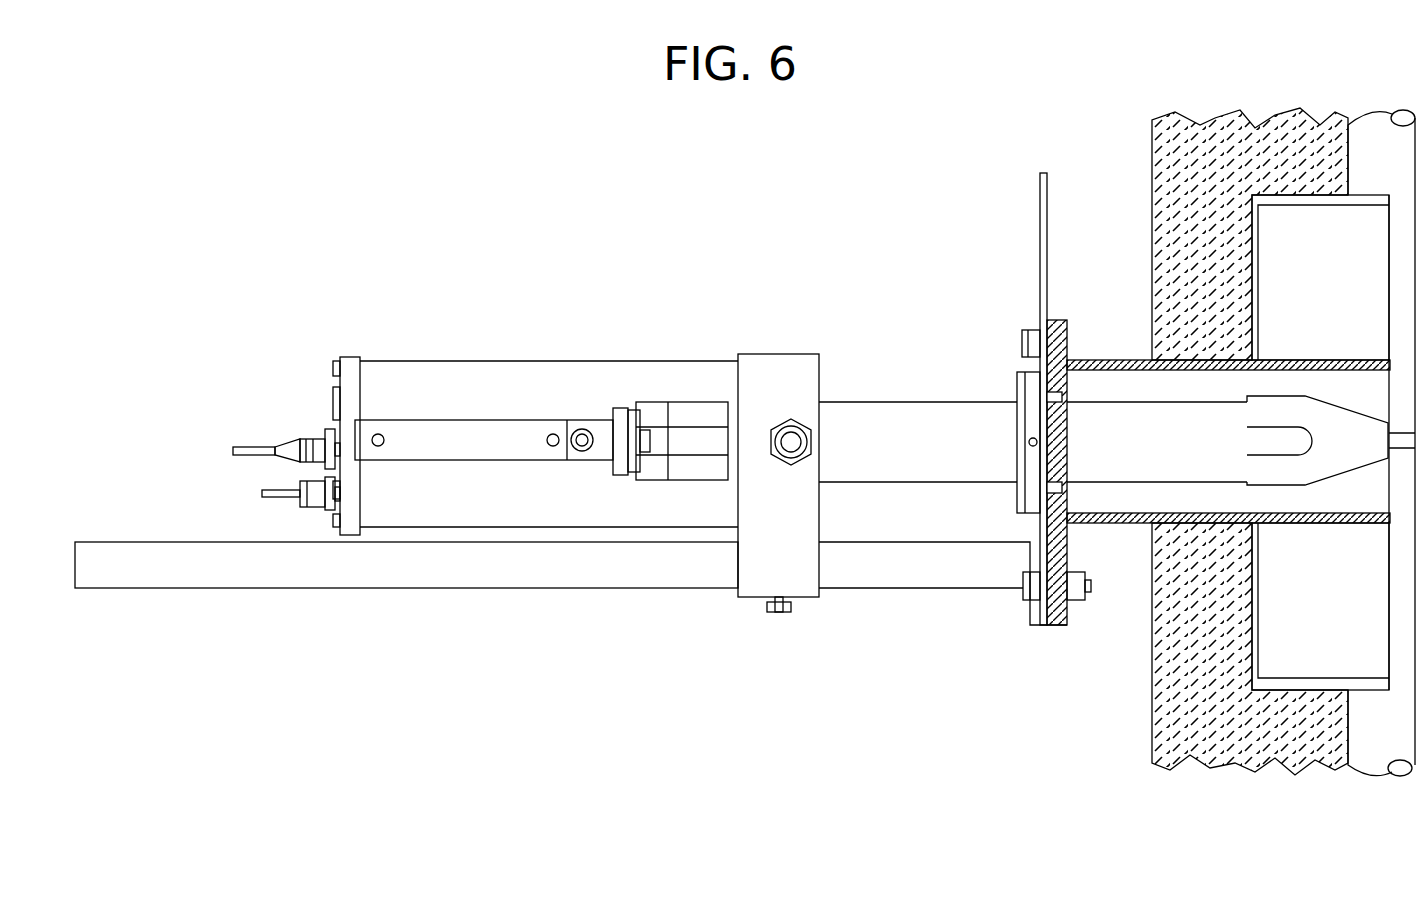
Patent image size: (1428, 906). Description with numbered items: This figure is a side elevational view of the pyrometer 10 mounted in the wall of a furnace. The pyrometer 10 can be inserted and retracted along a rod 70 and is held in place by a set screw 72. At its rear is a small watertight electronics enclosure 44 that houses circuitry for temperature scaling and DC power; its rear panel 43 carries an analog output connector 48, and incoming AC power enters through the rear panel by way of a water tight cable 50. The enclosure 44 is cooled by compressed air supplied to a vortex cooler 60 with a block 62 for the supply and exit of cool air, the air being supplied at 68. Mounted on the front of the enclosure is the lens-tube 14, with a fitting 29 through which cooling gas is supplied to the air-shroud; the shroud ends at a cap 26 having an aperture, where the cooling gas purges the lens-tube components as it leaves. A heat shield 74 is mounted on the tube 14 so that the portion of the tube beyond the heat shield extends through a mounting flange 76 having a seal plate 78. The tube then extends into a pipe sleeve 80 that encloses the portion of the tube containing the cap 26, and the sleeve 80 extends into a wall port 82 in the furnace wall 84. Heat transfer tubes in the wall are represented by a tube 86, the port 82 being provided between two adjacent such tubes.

The pyrometer 10 is at (896, 232).
The lens-tube 14 is at (921, 392).
The cap 26 is at (1328, 473).
The fitting 29 is at (775, 430).
The rear panel 43 is at (350, 367).
The electronics enclosure 44 is at (492, 368).
The analog output connector 48 is at (295, 445).
The water tight cable 50 is at (282, 498).
The vortex cooler 60 is at (445, 460).
The block 62 is at (693, 473).
The air supply 68 is at (590, 430).
The rod 70 is at (622, 590).
The set screw 72 is at (780, 612).
The heat shield 74 is at (1015, 372).
The mounting flange 76 is at (1055, 322).
The seal plate 78 is at (1042, 242).
The pipe sleeve 80 is at (1293, 525).
The wall port 82 is at (1258, 322).
The furnace wall 84 is at (1228, 735).
The tube 86 is at (1350, 648).